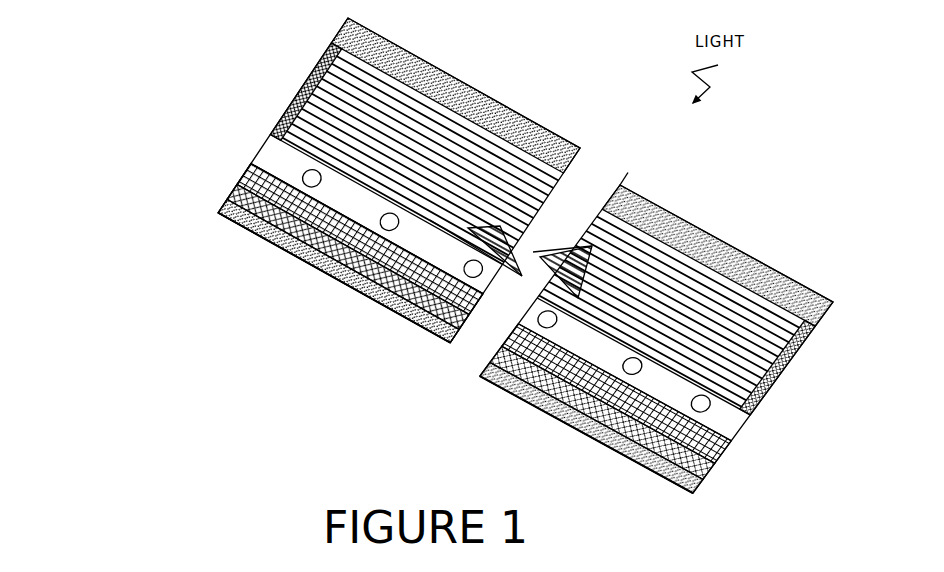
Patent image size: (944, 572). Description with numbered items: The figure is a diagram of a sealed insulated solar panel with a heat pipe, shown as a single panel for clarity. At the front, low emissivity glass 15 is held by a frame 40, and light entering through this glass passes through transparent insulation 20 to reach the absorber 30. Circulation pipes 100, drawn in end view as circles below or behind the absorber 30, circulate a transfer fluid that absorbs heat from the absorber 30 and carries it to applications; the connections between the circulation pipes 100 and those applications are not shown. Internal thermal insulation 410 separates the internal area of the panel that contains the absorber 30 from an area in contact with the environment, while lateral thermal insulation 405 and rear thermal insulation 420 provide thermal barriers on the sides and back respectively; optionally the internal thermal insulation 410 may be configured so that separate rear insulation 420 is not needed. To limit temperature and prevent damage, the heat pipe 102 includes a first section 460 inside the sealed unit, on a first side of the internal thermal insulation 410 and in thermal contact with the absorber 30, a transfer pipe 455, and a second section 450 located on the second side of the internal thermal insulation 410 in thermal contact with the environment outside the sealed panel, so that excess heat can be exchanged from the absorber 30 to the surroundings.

The low emissivity glass 15 is at (322, 56).
The frame 40 is at (306, 61).
The transparent insulation 20 is at (300, 122).
The lateral thermal insulation 405 is at (430, 156).
The absorber 30 is at (303, 174).
The internal thermal insulation 410 is at (262, 198).
The second section 450 is at (275, 242).
The transfer pipe 455 is at (262, 283).
The first section 460 is at (500, 350).
The rear thermal insulation 420 is at (575, 420).
The heat pipe 102 is at (113, 218).
The circulation pipes 100 is at (703, 403).